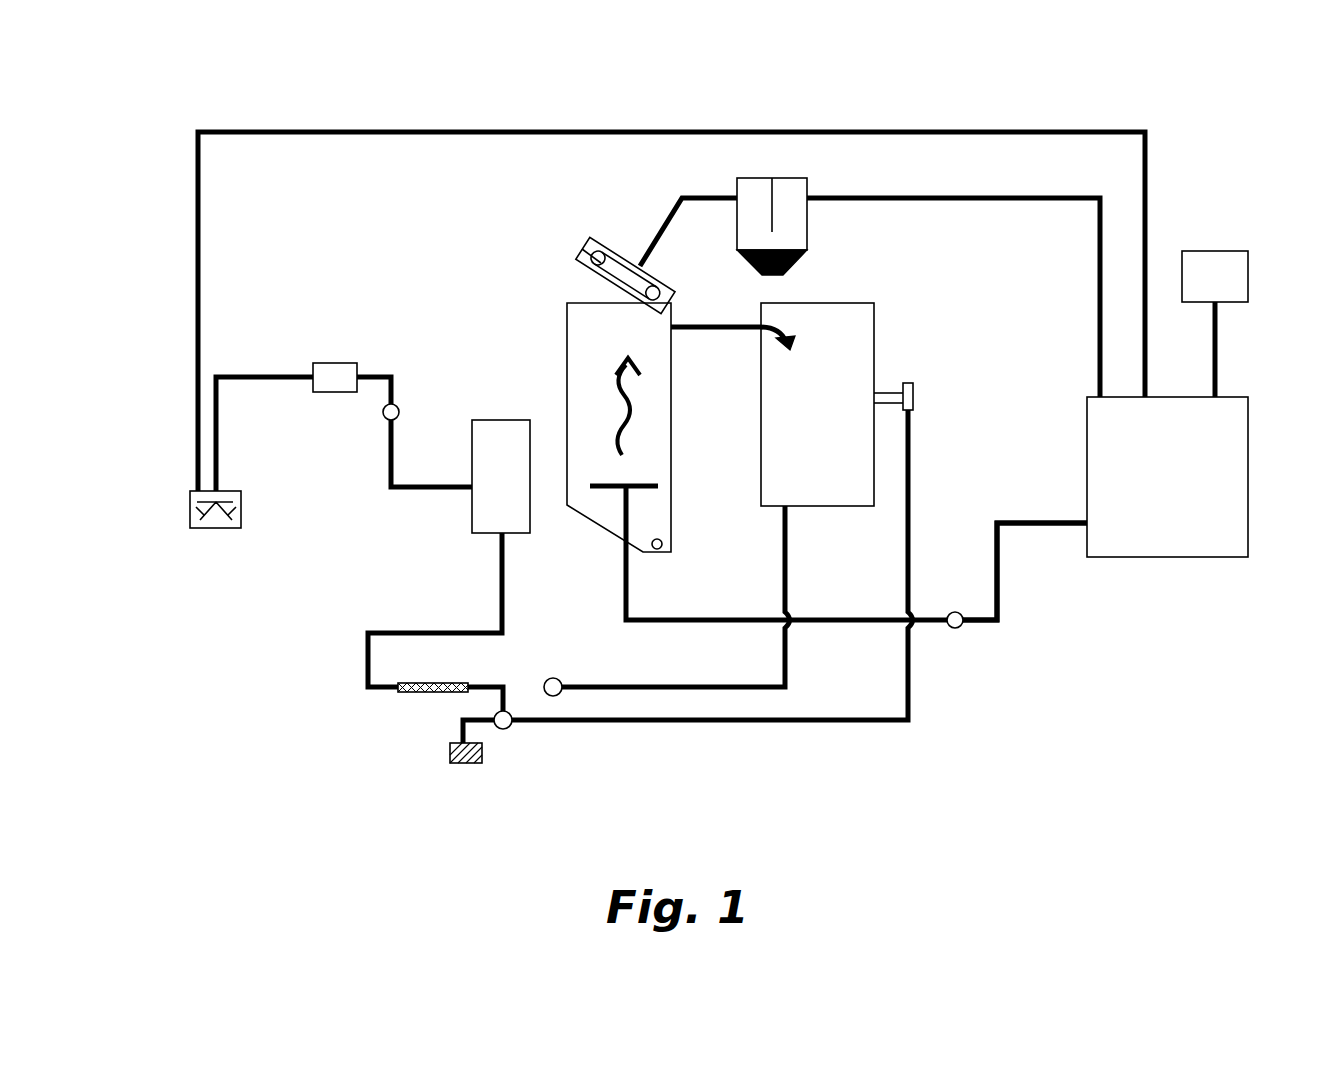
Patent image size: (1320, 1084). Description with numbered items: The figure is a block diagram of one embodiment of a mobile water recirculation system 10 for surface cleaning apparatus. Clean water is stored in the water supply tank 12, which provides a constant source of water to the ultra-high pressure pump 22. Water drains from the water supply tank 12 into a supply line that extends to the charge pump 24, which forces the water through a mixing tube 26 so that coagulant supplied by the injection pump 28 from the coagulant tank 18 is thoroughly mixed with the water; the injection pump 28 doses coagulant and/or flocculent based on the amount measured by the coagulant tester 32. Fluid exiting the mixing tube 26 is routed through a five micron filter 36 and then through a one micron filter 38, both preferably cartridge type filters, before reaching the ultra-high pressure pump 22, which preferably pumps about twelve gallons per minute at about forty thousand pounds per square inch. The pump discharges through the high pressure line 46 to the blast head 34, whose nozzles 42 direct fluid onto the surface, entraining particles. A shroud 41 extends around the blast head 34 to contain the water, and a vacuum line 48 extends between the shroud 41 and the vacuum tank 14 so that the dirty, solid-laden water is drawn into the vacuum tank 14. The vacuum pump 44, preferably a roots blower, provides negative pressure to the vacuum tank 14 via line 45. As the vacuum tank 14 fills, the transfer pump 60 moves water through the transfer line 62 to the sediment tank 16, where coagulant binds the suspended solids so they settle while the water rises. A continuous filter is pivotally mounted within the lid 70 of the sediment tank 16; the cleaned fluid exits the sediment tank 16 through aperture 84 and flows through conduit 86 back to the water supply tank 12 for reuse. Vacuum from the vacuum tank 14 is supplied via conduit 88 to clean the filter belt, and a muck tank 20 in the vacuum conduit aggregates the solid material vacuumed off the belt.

The mobile water recirculation system 10 is at (1028, 576).
The water supply tank 12 is at (713, 495).
The vacuum tank 14 is at (1167, 477).
The sediment tank 16 is at (827, 461).
The coagulant tank 18 is at (482, 760).
The muck tank 20 is at (790, 190).
The ultra-high pressure pump 22 is at (327, 362).
The charge pump 24 is at (553, 677).
The mixing tube 26 is at (413, 683).
The injection pump 28 is at (509, 727).
The coagulant tester 32 is at (908, 383).
The blast head 34 is at (237, 502).
The 5 micron filter 36 is at (505, 423).
The 1 micron filter 38 is at (383, 412).
The shroud 41 is at (232, 491).
The nozzles 42 is at (190, 508).
The vacuum pump 44 is at (1215, 276).
The line 45 is at (1217, 352).
The high pressure line 46 is at (287, 375).
The vacuum line 48 is at (563, 130).
The transfer pump 60 is at (956, 628).
The transfer line 62 is at (1027, 520).
The lid 70 is at (603, 240).
The aperture 84 is at (673, 318).
The conduit 86 is at (750, 332).
The conduit 88 is at (690, 193).